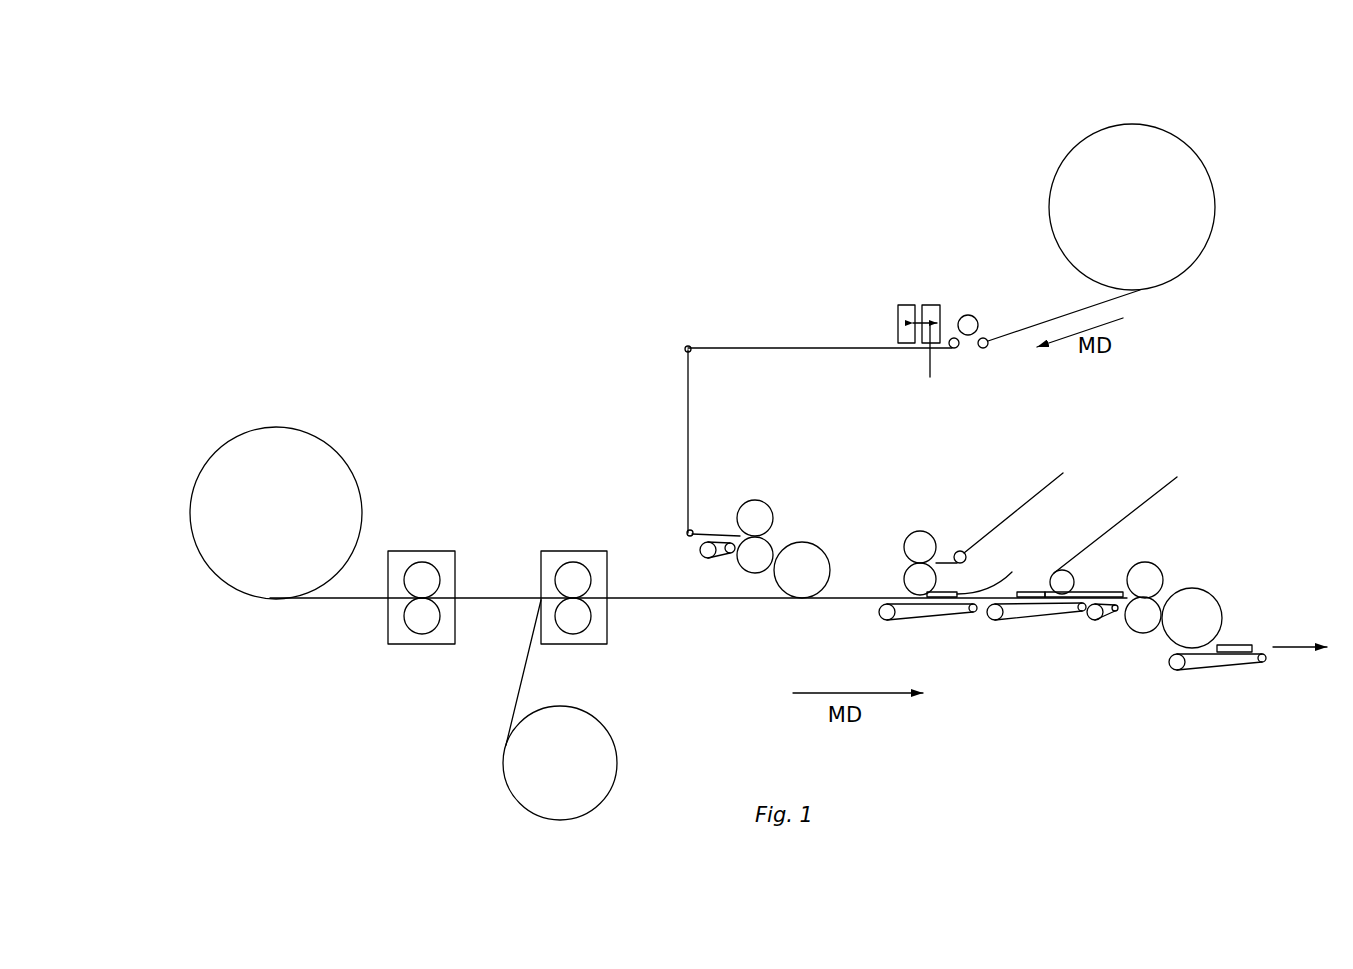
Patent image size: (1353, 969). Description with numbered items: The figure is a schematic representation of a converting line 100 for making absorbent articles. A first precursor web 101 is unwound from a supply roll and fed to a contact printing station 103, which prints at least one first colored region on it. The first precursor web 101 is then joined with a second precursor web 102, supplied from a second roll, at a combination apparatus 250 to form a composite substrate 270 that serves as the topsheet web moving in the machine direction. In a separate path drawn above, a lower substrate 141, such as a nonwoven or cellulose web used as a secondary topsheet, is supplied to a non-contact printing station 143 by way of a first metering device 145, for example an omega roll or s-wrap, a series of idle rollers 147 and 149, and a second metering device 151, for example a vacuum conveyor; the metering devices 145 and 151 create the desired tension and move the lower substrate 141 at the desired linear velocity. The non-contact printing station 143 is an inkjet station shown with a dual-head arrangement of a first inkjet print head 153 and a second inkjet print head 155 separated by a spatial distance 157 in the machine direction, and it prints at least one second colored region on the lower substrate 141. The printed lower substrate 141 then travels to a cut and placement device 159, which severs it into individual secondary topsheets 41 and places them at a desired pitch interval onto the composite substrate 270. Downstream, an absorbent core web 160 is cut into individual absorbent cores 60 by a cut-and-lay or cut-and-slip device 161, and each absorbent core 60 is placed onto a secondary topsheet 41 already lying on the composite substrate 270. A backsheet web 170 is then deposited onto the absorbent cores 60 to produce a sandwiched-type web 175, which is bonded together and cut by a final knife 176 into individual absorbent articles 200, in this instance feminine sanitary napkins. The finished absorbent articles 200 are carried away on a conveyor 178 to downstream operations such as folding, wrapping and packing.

The converting line 100 is at (541, 450).
The first precursor web 101 is at (232, 440).
The second precursor web 102 is at (515, 707).
The contact printing station 103 is at (422, 541).
The combination apparatus 250 is at (573, 541).
The composite substrate 270 is at (705, 598).
The lower substrate 141 is at (1175, 142).
The non-contact printing station 143 is at (919, 300).
The first metering device 145 is at (977, 323).
The idle roller 147 is at (686, 350).
The idle roller 149 is at (687, 532).
The second metering device 151 is at (700, 553).
The first inkjet print head 153 is at (907, 303).
The second inkjet print head 155 is at (933, 303).
The spatial distance 157 is at (930, 364).
The cut and placement device 159 is at (780, 533).
The absorbent core web 160 is at (1052, 488).
The cut-and-slip or cut-and-lay device 161 is at (946, 549).
The backsheet web 170 is at (1150, 499).
The sandwiched-type web 175 is at (1093, 590).
The final knife 176 is at (1168, 582).
The conveyor 178 is at (1232, 671).
The absorbent article 200 is at (1242, 645).
The secondary topsheet 41 is at (838, 597).
The absorbent core 60 is at (945, 592).